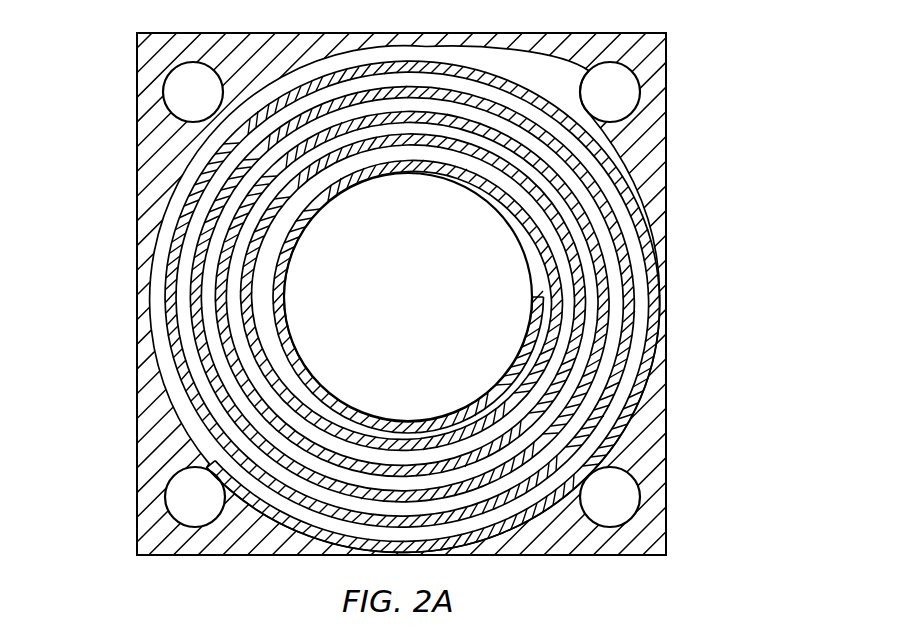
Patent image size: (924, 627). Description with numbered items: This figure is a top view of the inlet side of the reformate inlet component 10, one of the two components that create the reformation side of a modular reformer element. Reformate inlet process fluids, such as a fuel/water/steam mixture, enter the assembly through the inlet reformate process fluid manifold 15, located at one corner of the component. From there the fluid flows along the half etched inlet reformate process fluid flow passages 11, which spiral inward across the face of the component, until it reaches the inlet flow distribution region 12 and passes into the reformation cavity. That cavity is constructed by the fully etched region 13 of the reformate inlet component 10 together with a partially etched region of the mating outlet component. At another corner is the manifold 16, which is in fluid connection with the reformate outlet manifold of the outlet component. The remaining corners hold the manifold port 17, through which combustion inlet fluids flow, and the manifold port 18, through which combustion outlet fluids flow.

The reformate inlet component 10 is at (716, 103).
The inlet reformate process fluid flow passages 11 is at (614, 160).
The inlet flow distribution region 12 is at (527, 242).
The fully etched region 13 is at (445, 303).
The inlet reformate process fluid manifold 15 is at (623, 78).
The manifold 16 is at (180, 503).
The manifold port 17 is at (625, 497).
The manifold port 18 is at (180, 96).